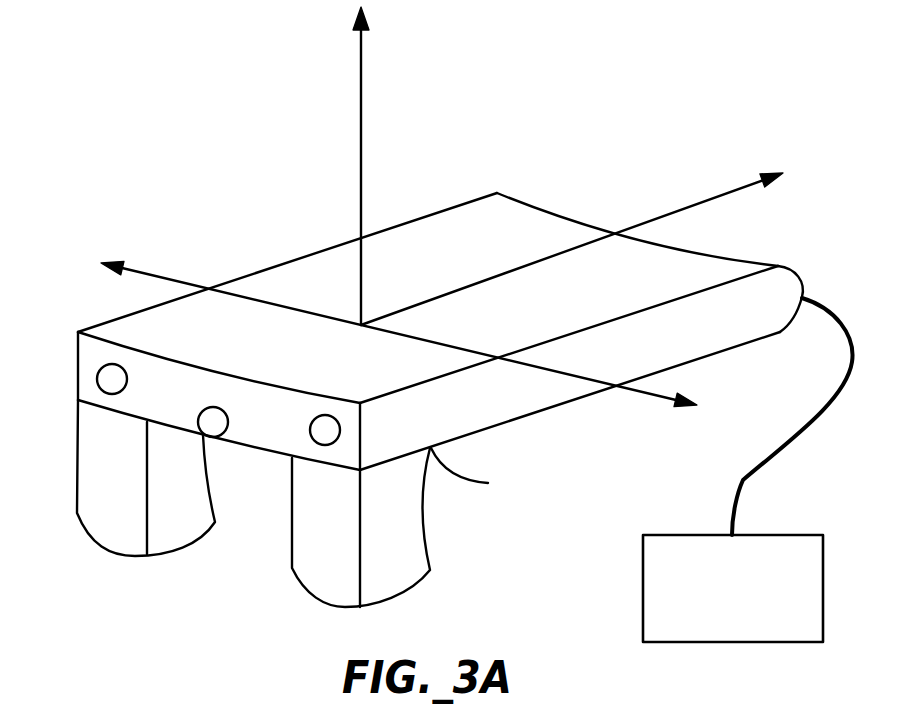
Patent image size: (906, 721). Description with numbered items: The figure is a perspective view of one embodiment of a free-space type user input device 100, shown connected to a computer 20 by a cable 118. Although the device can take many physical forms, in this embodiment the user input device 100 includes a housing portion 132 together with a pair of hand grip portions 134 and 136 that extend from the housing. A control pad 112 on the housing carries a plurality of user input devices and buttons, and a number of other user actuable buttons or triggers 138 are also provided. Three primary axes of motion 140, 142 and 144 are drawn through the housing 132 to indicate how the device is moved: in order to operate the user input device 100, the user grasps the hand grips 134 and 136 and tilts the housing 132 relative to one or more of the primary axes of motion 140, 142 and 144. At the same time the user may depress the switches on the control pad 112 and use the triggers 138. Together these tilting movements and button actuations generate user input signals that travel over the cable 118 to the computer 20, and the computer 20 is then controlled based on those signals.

The user input device 100 is at (715, 93).
The control pad 112 is at (90, 357).
The cable 118 is at (738, 478).
The computer 20 is at (670, 535).
The housing portion 132 is at (475, 215).
The hand grip portion 134 is at (173, 555).
The hand grip portion 136 is at (413, 593).
The user actuable buttons 138 is at (460, 474).
The primary axis of motion 140 is at (687, 205).
The primary axis of motion 142 is at (152, 271).
The primary axis of motion 144 is at (363, 97).